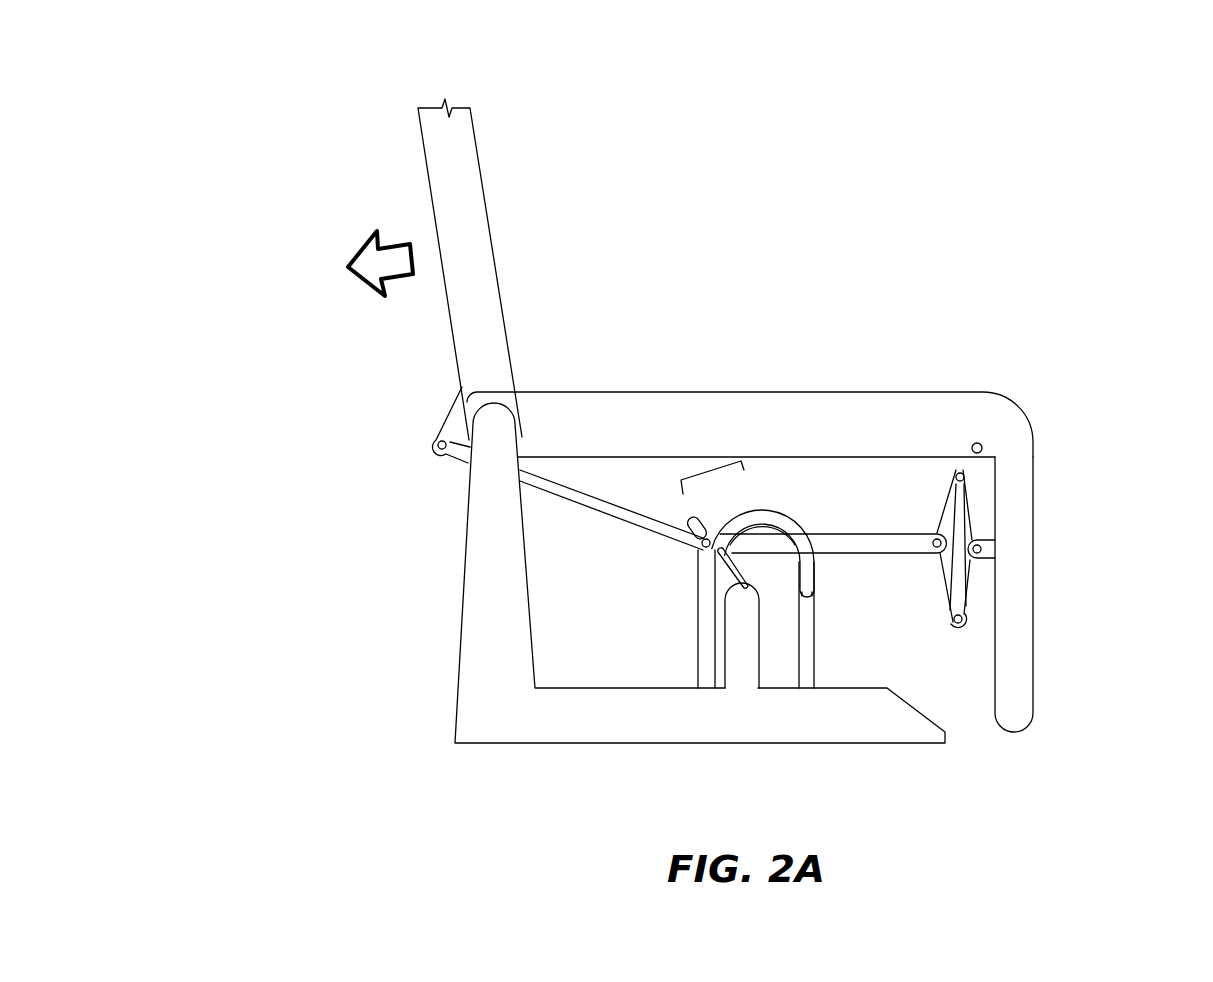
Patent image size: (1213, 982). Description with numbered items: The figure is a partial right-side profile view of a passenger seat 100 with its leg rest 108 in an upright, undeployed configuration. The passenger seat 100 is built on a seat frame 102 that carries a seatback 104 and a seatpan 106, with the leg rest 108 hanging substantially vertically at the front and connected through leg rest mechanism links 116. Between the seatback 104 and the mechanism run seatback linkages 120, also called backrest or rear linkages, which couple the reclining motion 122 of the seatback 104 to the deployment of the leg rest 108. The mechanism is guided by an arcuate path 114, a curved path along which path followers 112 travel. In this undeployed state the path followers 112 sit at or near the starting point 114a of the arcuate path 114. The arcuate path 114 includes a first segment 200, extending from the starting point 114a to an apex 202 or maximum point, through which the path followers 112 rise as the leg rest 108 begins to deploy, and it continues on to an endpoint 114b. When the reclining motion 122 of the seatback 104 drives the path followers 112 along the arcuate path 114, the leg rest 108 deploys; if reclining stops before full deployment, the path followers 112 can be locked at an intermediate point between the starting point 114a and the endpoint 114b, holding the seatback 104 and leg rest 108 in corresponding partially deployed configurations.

The passenger seat 100 is at (204, 109).
The seat frame 102 is at (468, 655).
The seatback 104 is at (466, 250).
The seatpan 106 is at (1010, 420).
The leg rest 108 is at (1010, 600).
The path followers 112 is at (705, 548).
The arcuate path 114 is at (790, 500).
The starting point 114a is at (700, 558).
The endpoint 114b is at (818, 601).
The leg rest mechanism links 116 is at (968, 580).
The seatback linkages 120 is at (617, 513).
The reclining motion 122 is at (366, 270).
The first segment 200 is at (700, 458).
The apex 202 is at (750, 506).